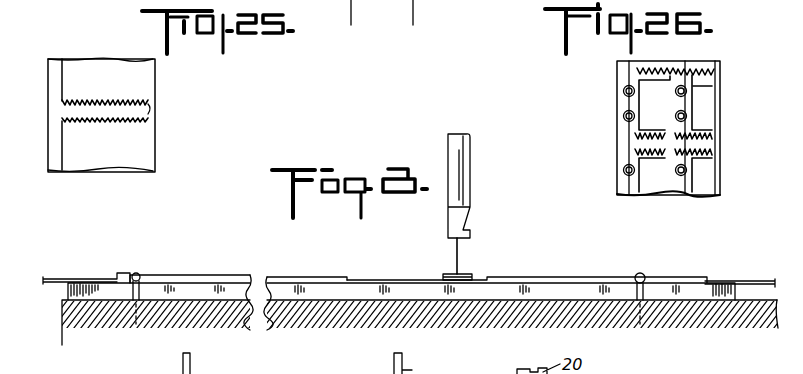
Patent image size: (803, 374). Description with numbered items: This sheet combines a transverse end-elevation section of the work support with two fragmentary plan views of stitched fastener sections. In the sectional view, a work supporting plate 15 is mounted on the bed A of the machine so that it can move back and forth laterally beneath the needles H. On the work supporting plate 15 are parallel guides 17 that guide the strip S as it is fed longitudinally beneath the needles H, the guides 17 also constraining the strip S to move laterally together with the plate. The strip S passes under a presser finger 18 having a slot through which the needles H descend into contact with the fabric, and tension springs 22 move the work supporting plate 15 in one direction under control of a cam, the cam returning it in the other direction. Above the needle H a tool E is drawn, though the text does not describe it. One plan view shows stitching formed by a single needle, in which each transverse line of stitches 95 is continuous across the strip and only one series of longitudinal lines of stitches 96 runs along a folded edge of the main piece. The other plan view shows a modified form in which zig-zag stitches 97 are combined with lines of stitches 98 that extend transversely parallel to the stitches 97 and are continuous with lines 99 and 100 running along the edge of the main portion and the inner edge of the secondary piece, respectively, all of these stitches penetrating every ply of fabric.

In FIG. 25, the transverse line of stitches 95 is at (128, 100).
In FIG. 25, the longitudinal lines of stitches 96 is at (62, 78).
In FIG. 26, the zig-zag stitches 97 is at (692, 70).
In FIG. 26, the lines of stitches 98 is at (707, 87).
In FIG. 26, the line of stitches 99 is at (639, 107).
In FIG. 26, the line of stitches 100 is at (692, 107).
In FIG. 8, the bed A is at (62, 302).
In FIG. 8, the work supporting plate 15 is at (313, 283).
In FIG. 8, the guides 17 is at (199, 278).
In FIG. 8, the presser finger 18 is at (450, 273).
In FIG. 8, the tension springs 22 is at (137, 273).
In FIG. 8, the strip S is at (62, 279).
In FIG. 8, the tool E is at (465, 174).
In FIG. 8, the needles H is at (460, 253).